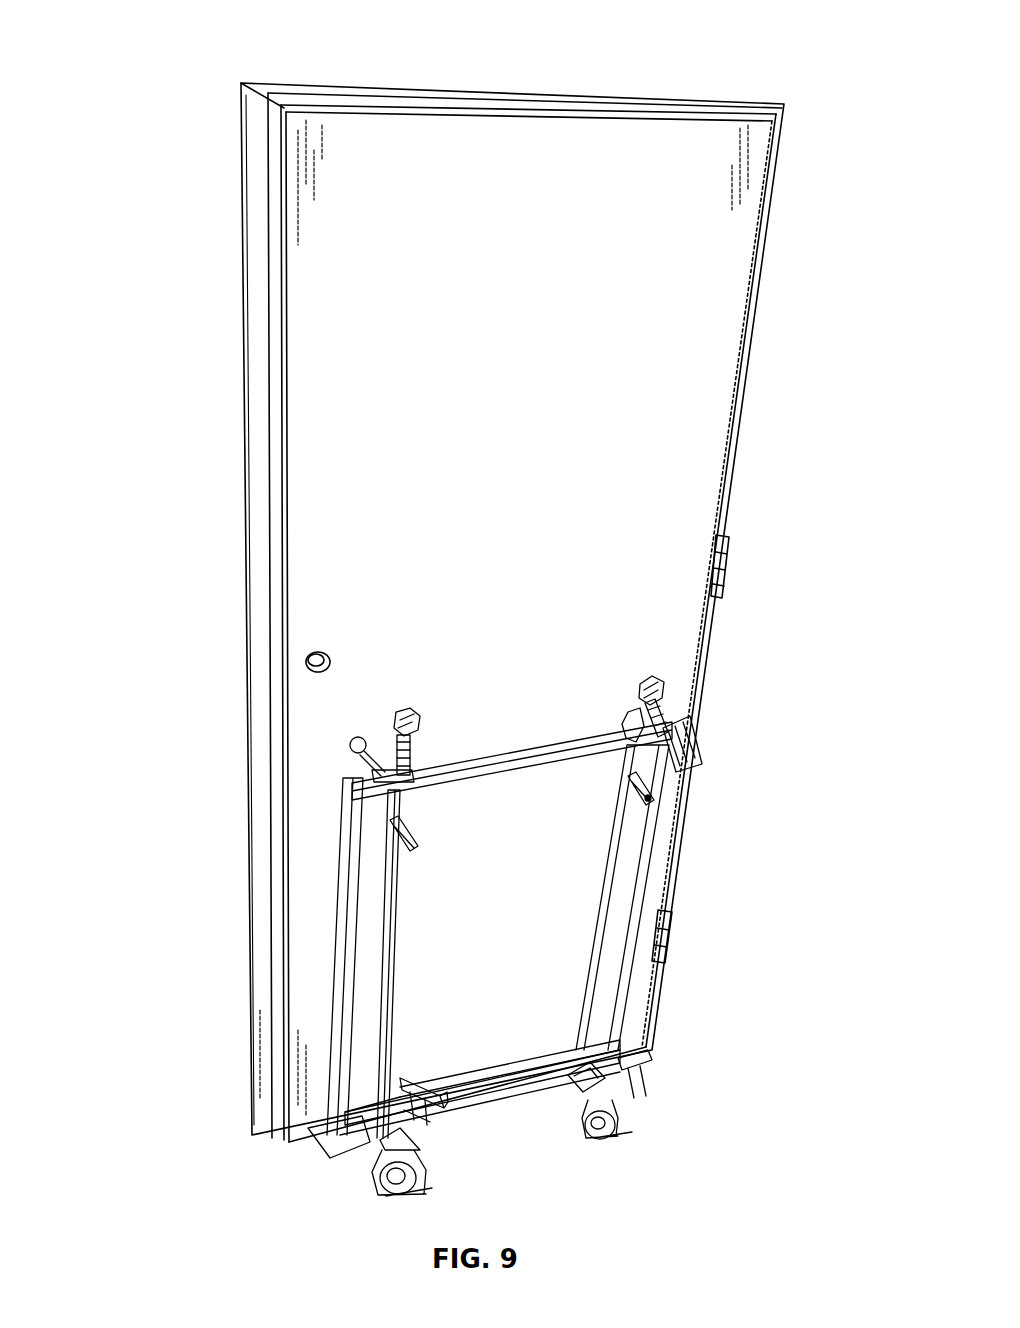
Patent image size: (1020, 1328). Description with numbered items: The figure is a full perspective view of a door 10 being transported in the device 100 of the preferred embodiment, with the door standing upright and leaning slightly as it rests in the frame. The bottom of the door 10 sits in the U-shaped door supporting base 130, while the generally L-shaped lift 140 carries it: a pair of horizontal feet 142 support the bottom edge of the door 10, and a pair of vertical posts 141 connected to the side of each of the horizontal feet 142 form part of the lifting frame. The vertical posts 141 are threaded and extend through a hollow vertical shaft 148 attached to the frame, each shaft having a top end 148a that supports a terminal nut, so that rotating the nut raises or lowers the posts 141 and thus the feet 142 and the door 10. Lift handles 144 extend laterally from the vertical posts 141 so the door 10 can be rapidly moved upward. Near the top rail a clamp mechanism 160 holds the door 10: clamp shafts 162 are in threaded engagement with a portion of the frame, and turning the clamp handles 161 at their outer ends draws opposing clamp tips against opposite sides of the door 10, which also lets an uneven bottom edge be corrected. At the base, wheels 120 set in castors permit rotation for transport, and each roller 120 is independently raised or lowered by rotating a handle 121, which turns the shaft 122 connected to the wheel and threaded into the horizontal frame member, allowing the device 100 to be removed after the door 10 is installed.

The door 10 is at (668, 108).
The device 100 is at (445, 908).
The wheels 120 is at (378, 1190).
The handle 121 is at (650, 1065).
The shaft 122 is at (445, 1100).
The door supporting base 130 is at (290, 1140).
The lift 140 is at (620, 935).
The vertical posts 141 is at (387, 964).
The horizontal feet 142 is at (583, 1078).
The lift handles 144 is at (412, 838).
The hollow vertical shaft 148 is at (410, 755).
The top end 148a is at (393, 722).
The clamp mechanism 160 is at (695, 710).
The clamp handles 161 is at (700, 745).
The clamp shafts 162 is at (630, 716).